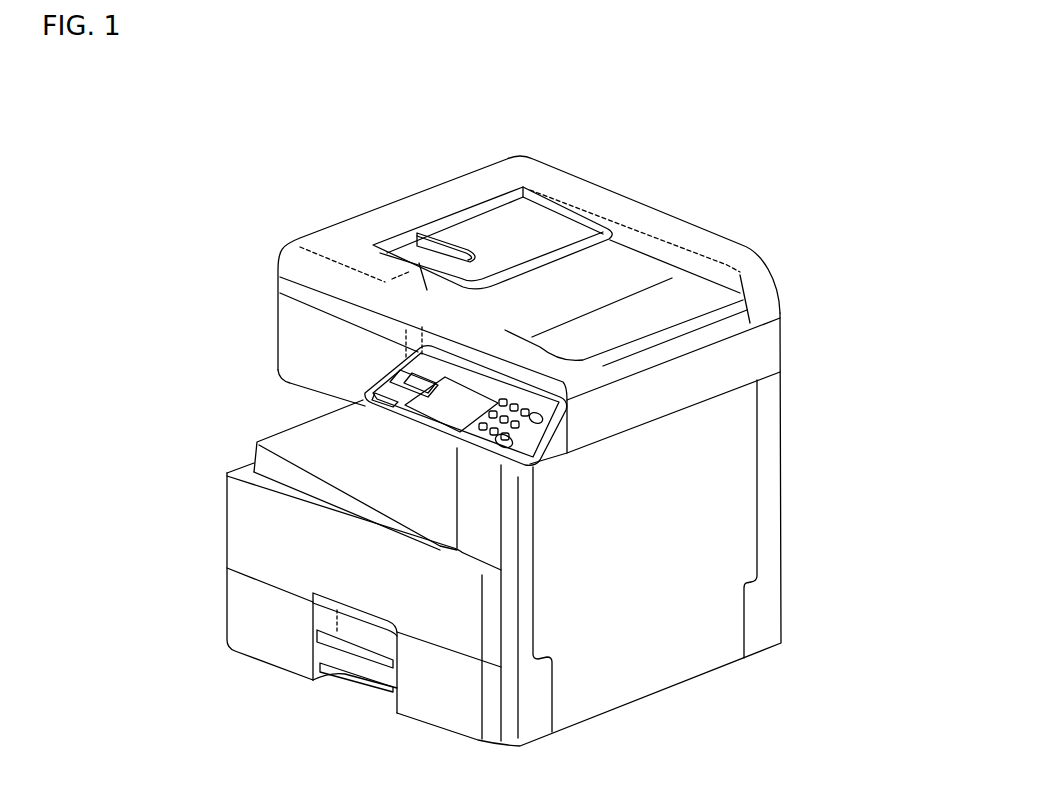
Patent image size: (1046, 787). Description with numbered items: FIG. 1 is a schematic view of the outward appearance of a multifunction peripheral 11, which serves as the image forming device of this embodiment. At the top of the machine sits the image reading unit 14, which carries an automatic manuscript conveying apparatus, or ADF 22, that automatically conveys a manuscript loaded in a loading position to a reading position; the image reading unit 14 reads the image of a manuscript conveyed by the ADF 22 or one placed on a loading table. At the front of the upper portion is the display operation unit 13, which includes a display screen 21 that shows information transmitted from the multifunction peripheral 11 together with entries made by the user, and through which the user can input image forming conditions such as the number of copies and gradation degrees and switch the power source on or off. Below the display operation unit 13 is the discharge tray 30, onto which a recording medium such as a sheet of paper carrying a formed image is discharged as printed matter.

The multifunction peripheral 11 is at (782, 116).
The display operation unit 13 is at (373, 366).
The image reading unit 14 is at (842, 221).
The display screen 21 is at (360, 403).
The automatic manuscript conveying apparatus (ADF) 22 is at (634, 256).
The discharge tray 30 is at (347, 453).